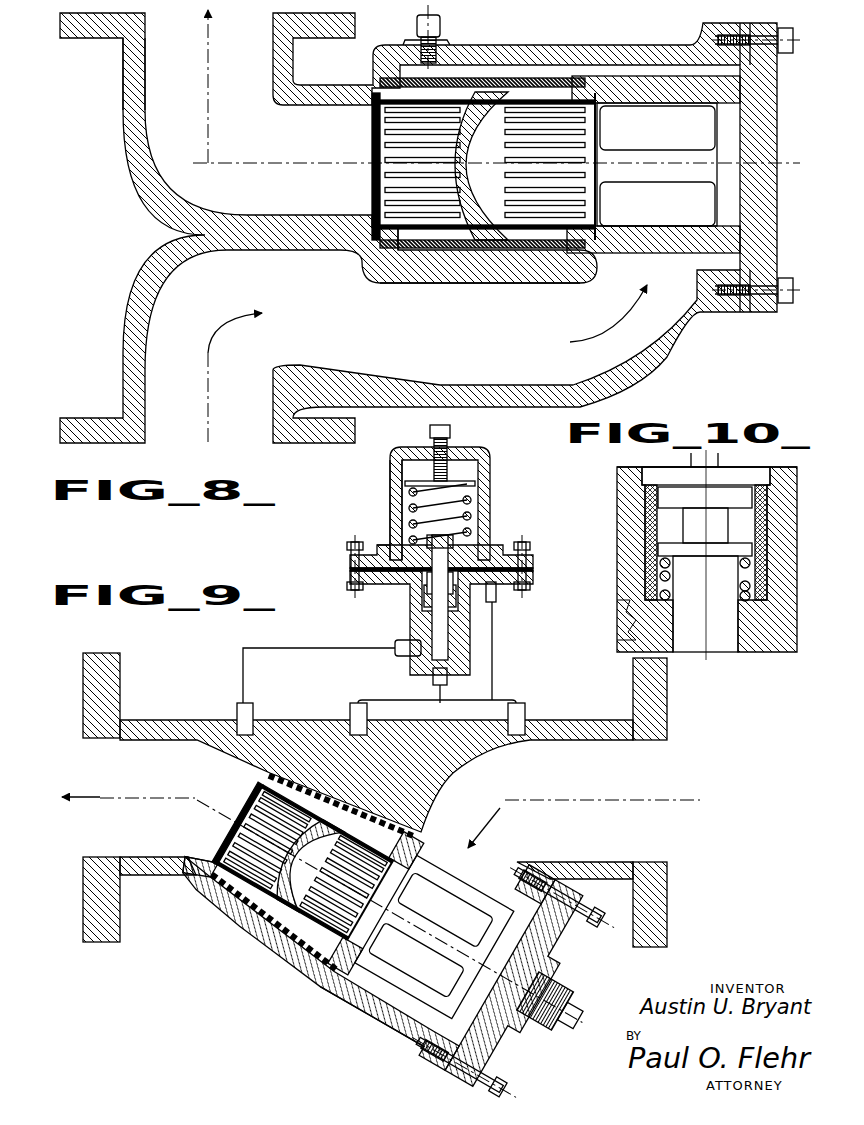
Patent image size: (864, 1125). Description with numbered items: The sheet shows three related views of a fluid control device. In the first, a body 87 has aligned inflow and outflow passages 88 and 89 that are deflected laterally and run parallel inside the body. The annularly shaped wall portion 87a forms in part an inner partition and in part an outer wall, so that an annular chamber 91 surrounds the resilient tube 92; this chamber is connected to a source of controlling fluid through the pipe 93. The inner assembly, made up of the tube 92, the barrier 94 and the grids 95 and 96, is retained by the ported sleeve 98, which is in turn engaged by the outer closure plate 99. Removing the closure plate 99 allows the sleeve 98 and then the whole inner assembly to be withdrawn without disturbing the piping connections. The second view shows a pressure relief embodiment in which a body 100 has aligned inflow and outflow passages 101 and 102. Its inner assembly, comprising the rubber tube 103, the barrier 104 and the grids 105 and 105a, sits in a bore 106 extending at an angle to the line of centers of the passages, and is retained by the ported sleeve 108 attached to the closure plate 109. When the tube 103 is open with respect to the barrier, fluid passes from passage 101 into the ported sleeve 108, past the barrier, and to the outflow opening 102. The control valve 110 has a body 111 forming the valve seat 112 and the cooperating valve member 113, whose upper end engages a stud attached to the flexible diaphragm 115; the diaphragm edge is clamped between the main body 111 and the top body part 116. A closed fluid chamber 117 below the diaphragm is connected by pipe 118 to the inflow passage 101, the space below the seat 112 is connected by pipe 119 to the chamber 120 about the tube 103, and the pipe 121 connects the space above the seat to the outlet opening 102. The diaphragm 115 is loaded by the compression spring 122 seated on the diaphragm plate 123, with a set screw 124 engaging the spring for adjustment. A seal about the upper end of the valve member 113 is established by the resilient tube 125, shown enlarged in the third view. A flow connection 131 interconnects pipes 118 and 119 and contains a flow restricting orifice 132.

In FIG. 8, the body 87 is at (528, 395).
In FIG. 8, the wall portion 87a is at (530, 284).
In FIG. 8, the inflow passage 88 is at (152, 356).
In FIG. 8, the outflow passage 89 is at (152, 68).
In FIG. 8, the annular chamber 91 is at (478, 250).
In FIG. 8, the tube 92 is at (428, 250).
In FIG. 8, the pipe 93 is at (441, 27).
In FIG. 8, the barrier 94 is at (462, 195).
In FIG. 8, the grid 95 is at (380, 186).
In FIG. 8, the grid 96 is at (596, 205).
In FIG. 8, the ported sleeve 98 is at (626, 254).
In FIG. 8, the outer closure plate 99 is at (777, 204).
In FIG. 9, the body 100 is at (198, 867).
In FIG. 9, the inflow passage 101 is at (657, 843).
In FIG. 9, the outflow passage 102 is at (90, 760).
In FIG. 9, the rubber tube 103 is at (274, 921).
In FIG. 9, the barrier 104 is at (315, 964).
In FIG. 9, the grid 105 is at (376, 903).
In FIG. 9, the grid 105a is at (305, 862).
In FIG. 9, the bore 106 is at (198, 859).
In FIG. 9, the ported sleeve 108 is at (372, 1017).
In FIG. 9, the closure plate 109 is at (519, 986).
In FIG. 9, the control valve 110 is at (490, 500).
In FIG. 9, the body 111 is at (350, 578).
In FIG. 9, the valve seat 112 is at (430, 662).
In FIG. 9, the valve member 113 is at (440, 636).
In FIG. 9, the flexible diaphragm 115 is at (392, 543).
In FIG. 9, the top body part 116 is at (391, 486).
In FIG. 9, the closed fluid chamber 117 is at (410, 582).
In FIG. 9, the pipe 118 is at (496, 598).
In FIG. 9, the pipe 119 is at (351, 712).
In FIG. 9, the chamber 120 is at (341, 805).
In FIG. 9, the pipe 121 is at (237, 708).
In FIG. 9, the compression spring 122 is at (468, 497).
In FIG. 9, the diaphragm plate 123 is at (505, 552).
In FIG. 9, the set screw 124 is at (450, 431).
In FIG. 9, the tube 125 is at (422, 596).
In FIG. 9, the flow connection 131 is at (526, 710).
In FIG. 9, the flow restricting orifice 132 is at (472, 701).